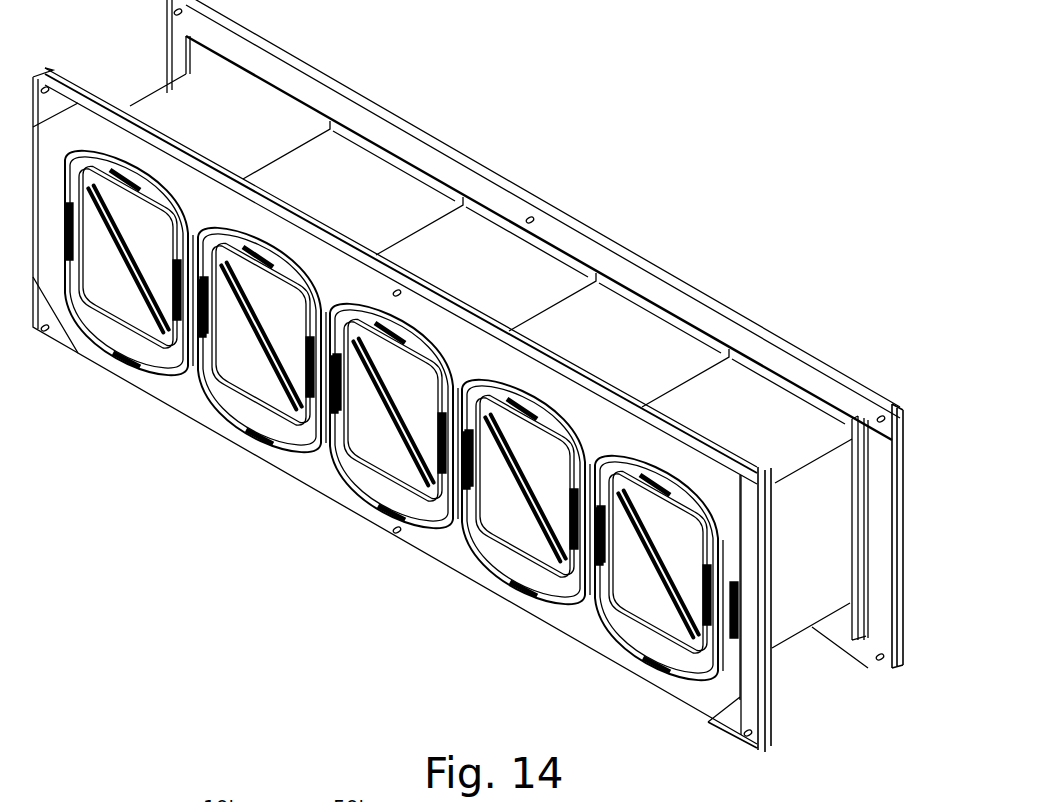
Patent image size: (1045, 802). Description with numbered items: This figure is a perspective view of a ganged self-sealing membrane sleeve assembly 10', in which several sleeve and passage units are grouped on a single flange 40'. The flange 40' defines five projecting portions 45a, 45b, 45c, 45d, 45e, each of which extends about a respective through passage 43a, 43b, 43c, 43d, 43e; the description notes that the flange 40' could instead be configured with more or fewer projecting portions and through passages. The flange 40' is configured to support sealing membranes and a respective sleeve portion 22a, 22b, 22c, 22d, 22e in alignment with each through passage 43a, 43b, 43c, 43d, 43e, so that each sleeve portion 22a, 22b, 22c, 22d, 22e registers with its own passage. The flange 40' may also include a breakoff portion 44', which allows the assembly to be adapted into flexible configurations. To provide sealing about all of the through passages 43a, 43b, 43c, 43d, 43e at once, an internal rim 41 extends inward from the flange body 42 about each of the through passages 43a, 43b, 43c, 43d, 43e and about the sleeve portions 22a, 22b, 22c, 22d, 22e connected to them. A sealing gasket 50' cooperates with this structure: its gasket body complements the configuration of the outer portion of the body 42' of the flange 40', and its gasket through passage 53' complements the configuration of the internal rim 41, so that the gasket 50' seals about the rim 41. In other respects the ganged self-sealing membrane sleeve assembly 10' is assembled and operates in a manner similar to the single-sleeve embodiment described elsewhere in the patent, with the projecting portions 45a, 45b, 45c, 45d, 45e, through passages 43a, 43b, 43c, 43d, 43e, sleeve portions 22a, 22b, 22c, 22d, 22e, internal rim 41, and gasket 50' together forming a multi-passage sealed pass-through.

The ganged self-sealing membrane sleeve assembly 10' is at (488, 397).
The sleeve portion 22a is at (780, 400).
The sleeve portion 22b is at (632, 323).
The sleeve portion 22c is at (527, 250).
The sleeve portion 22d is at (367, 157).
The sleeve portion 22e is at (248, 104).
The flange 40' is at (417, 423).
The internal rim 41 is at (860, 453).
The flange body 42 is at (401, 269).
The body of the flange 42' is at (784, 605).
The through passage 43a is at (642, 648).
The through passage 43b is at (509, 568).
The through passage 43c is at (378, 496).
The through passage 43d is at (245, 420).
The through passage 43e is at (112, 343).
The breakoff portion 44' is at (402, 412).
The projecting portion 45a is at (646, 613).
The projecting portion 45b is at (513, 537).
The projecting portion 45c is at (381, 459).
The projecting portion 45d is at (249, 383).
The projecting portion 45e is at (116, 308).
The sealing gasket 50' is at (846, 591).
The gasket through passage 53' is at (903, 529).